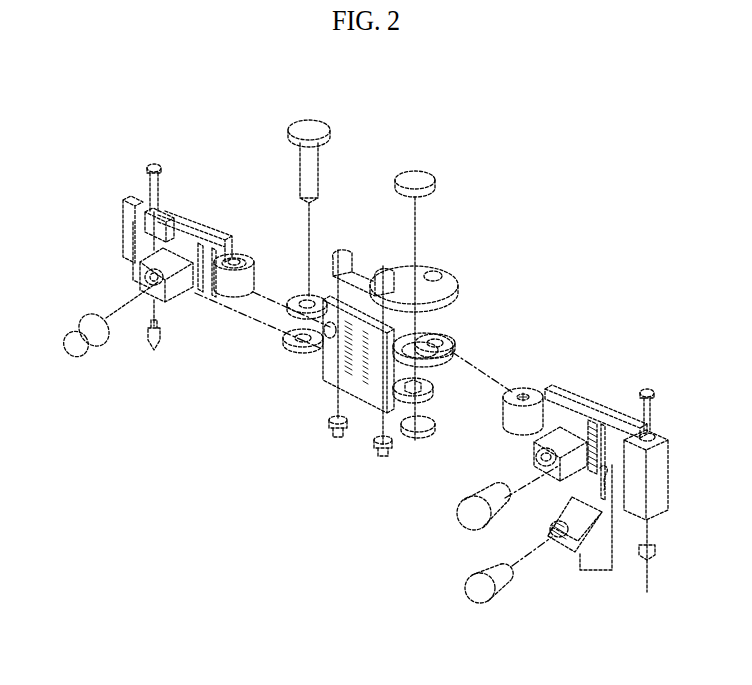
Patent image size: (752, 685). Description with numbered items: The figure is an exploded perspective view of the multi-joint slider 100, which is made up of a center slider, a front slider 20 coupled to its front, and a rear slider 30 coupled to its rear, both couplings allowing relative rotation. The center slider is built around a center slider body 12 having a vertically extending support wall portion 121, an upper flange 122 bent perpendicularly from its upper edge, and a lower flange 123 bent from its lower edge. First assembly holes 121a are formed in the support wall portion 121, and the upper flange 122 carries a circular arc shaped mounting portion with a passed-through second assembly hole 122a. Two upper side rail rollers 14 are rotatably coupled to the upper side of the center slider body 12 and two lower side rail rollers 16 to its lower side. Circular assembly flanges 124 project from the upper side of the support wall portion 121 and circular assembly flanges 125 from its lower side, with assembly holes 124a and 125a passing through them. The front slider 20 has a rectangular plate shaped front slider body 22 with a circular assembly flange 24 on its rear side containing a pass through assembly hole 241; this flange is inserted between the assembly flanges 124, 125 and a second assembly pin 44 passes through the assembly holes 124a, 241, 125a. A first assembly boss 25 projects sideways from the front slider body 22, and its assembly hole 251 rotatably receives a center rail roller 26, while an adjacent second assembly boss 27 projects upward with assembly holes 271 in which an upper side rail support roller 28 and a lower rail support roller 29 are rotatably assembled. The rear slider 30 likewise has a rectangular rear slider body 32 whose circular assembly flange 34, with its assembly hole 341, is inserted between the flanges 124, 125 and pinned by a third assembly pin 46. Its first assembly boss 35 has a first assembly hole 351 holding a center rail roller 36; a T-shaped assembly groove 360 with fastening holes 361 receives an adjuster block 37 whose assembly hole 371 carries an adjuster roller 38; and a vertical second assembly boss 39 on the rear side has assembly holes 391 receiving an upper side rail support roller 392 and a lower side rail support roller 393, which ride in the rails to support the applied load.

The multi-joint slider 100 is at (528, 160).
The front slider 20 is at (112, 204).
The front slider body 22 is at (199, 232).
The circular assembly flange 24 is at (229, 258).
The pass through assembly hole 241 is at (240, 260).
The first assembly boss 25 is at (185, 300).
The assembly hole 251 is at (148, 282).
The center rail roller 26 is at (79, 350).
The second assembly boss 27 is at (142, 213).
The assembly holes 271 is at (160, 213).
The upper side rail support roller 28 is at (154, 160).
The lower rail support roller 29 is at (153, 353).
The center slider body 12 is at (352, 379).
The support wall portion 121 is at (357, 353).
The first assembly holes 121a is at (300, 329).
The upper flange 122 is at (452, 272).
The second assembly hole 122a is at (442, 273).
The lower flange 123 is at (438, 327).
The circular assembly flanges 124 is at (301, 293).
The assembly hole 124a is at (447, 353).
The circular assembly flanges 125 is at (300, 350).
The assembly hole 125a is at (422, 419).
The upper side rail rollers 14 is at (376, 272).
The lower side rail rollers 16 is at (384, 448).
The second assembly pin 44 is at (309, 120).
The third assembly pin 46 is at (416, 170).
The rear slider 30 is at (628, 407).
The rear slider body 32 is at (565, 390).
The circular assembly flange 34 is at (548, 388).
The pass through assembly hole 341 is at (527, 393).
The first assembly boss 35 is at (562, 478).
The first assembly hole 351 is at (538, 462).
The center rail roller 36 is at (470, 525).
The fastening holes 361 is at (598, 420).
The assembly groove 360 is at (614, 517).
The adjuster block 37 is at (579, 552).
The assembly hole 371 is at (557, 554).
The adjuster roller 38 is at (473, 598).
The second assembly boss 39 is at (665, 490).
The assembly holes 391 is at (648, 432).
The upper side rail support roller 392 is at (650, 388).
The lower side rail support roller 393 is at (648, 568).